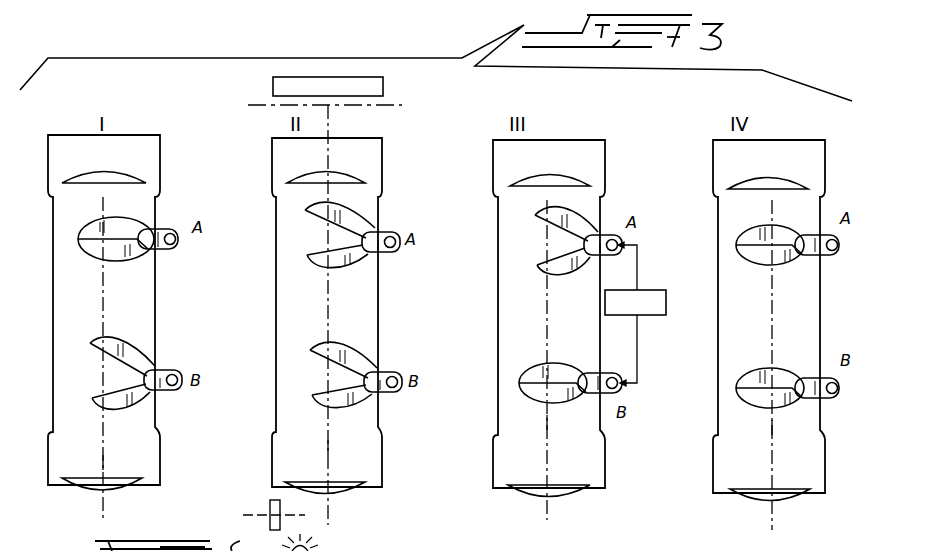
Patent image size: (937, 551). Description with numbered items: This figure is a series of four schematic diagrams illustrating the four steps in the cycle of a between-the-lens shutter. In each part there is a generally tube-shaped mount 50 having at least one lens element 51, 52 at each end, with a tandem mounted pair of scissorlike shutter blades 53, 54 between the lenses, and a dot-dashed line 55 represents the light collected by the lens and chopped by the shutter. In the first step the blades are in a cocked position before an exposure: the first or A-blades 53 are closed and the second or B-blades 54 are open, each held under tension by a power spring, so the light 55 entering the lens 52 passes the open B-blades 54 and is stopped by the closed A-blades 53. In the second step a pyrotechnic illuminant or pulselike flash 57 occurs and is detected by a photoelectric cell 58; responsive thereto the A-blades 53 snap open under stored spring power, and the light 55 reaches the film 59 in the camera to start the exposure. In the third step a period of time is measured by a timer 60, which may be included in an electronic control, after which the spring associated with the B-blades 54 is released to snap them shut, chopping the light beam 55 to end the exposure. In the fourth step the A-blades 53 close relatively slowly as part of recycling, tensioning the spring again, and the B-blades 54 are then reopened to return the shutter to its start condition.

The tube-shaped mount 50 is at (160, 311).
The lens element 51 is at (110, 172).
The lens element 52 is at (110, 493).
The A-blades 53 is at (108, 220).
The B-blades 54 is at (146, 344).
The light 55 is at (103, 462).
The pulselike flash 57 is at (316, 549).
The photoelectric cell 58 is at (270, 503).
The film 59 is at (385, 106).
The timer 60 is at (645, 290).